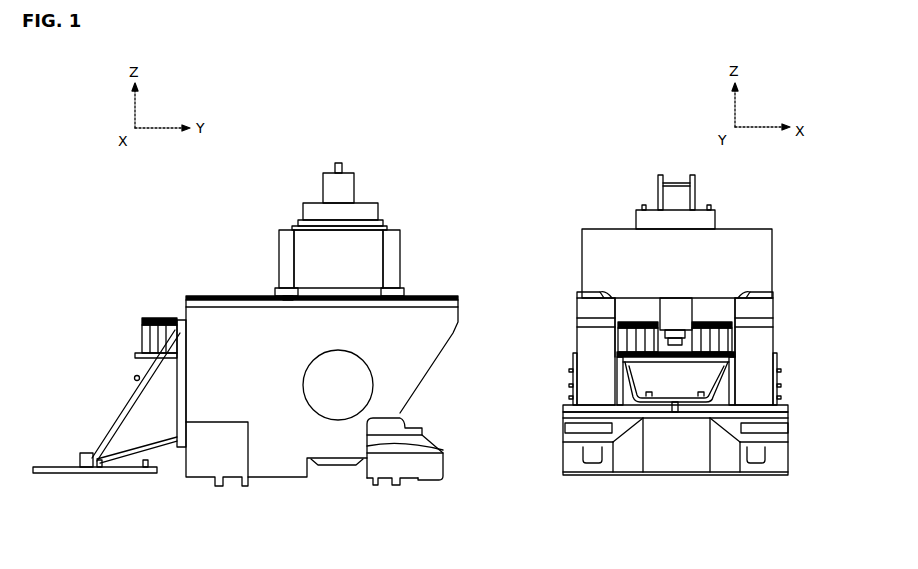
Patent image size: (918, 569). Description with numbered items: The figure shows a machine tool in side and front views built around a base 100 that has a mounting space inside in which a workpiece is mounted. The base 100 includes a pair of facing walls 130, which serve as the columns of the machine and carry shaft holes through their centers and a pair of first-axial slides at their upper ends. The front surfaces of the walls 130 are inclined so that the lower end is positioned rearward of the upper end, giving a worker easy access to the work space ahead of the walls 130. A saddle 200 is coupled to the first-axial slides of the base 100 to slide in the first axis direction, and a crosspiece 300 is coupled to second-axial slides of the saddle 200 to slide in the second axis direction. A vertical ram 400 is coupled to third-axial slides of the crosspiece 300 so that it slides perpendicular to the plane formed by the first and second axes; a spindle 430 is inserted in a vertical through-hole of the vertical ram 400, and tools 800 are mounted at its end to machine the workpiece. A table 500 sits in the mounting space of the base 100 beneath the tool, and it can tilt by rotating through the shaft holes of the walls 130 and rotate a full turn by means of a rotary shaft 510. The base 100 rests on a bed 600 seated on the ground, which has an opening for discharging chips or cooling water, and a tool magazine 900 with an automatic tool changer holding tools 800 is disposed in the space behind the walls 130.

The base 100 is at (595, 407).
The walls 130 is at (590, 349).
The saddle 200 is at (595, 262).
The crosspiece 300 is at (643, 222).
The vertical ram 400 is at (670, 197).
The spindle 430 is at (688, 338).
The table 500 is at (625, 388).
The rotary shaft 510 is at (675, 412).
The bed 600 is at (655, 443).
The tools 800 is at (155, 338).
The tool magazine 900 is at (157, 316).